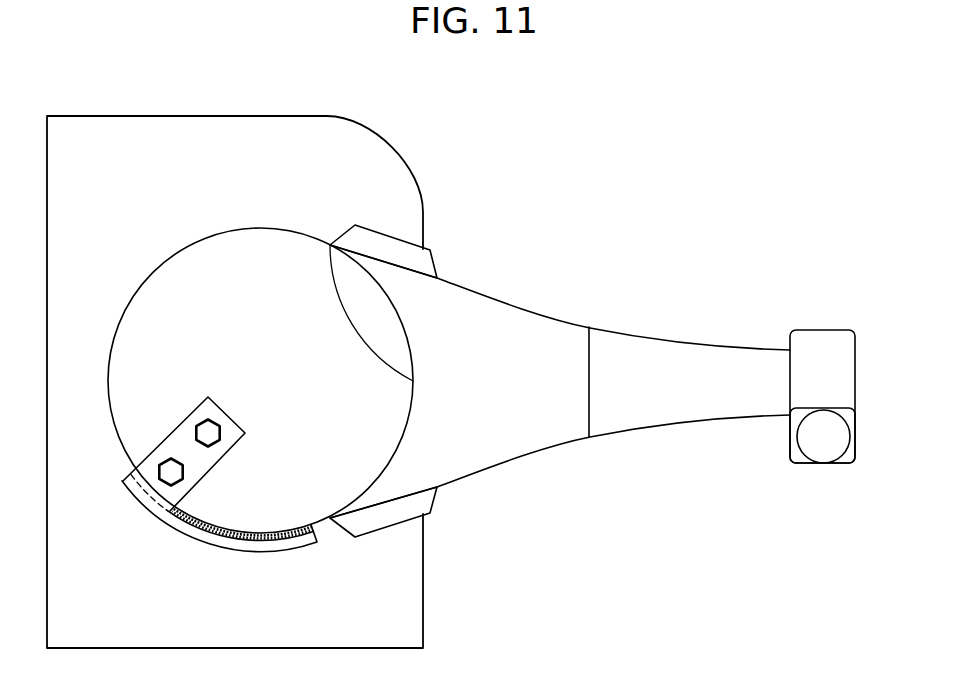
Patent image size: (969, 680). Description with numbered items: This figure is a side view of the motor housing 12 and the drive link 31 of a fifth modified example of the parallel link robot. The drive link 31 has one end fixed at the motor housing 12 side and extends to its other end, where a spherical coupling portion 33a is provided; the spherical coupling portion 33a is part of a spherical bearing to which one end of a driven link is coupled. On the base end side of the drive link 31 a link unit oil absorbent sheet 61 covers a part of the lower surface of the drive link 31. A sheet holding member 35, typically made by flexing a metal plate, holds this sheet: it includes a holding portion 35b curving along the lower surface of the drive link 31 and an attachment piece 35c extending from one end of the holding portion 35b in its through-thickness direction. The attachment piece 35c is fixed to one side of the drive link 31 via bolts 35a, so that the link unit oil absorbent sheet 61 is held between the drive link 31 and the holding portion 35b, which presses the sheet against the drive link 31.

The motor housing 12 is at (292, 115).
The drive link 31 is at (503, 300).
The spherical coupling portion 33a is at (819, 447).
The sheet holding member 35 is at (248, 435).
The bolts 35a is at (207, 430).
The holding portion 35b is at (275, 548).
The attachment piece 35c is at (182, 447).
The link unit oil absorbent sheet 61 is at (227, 540).